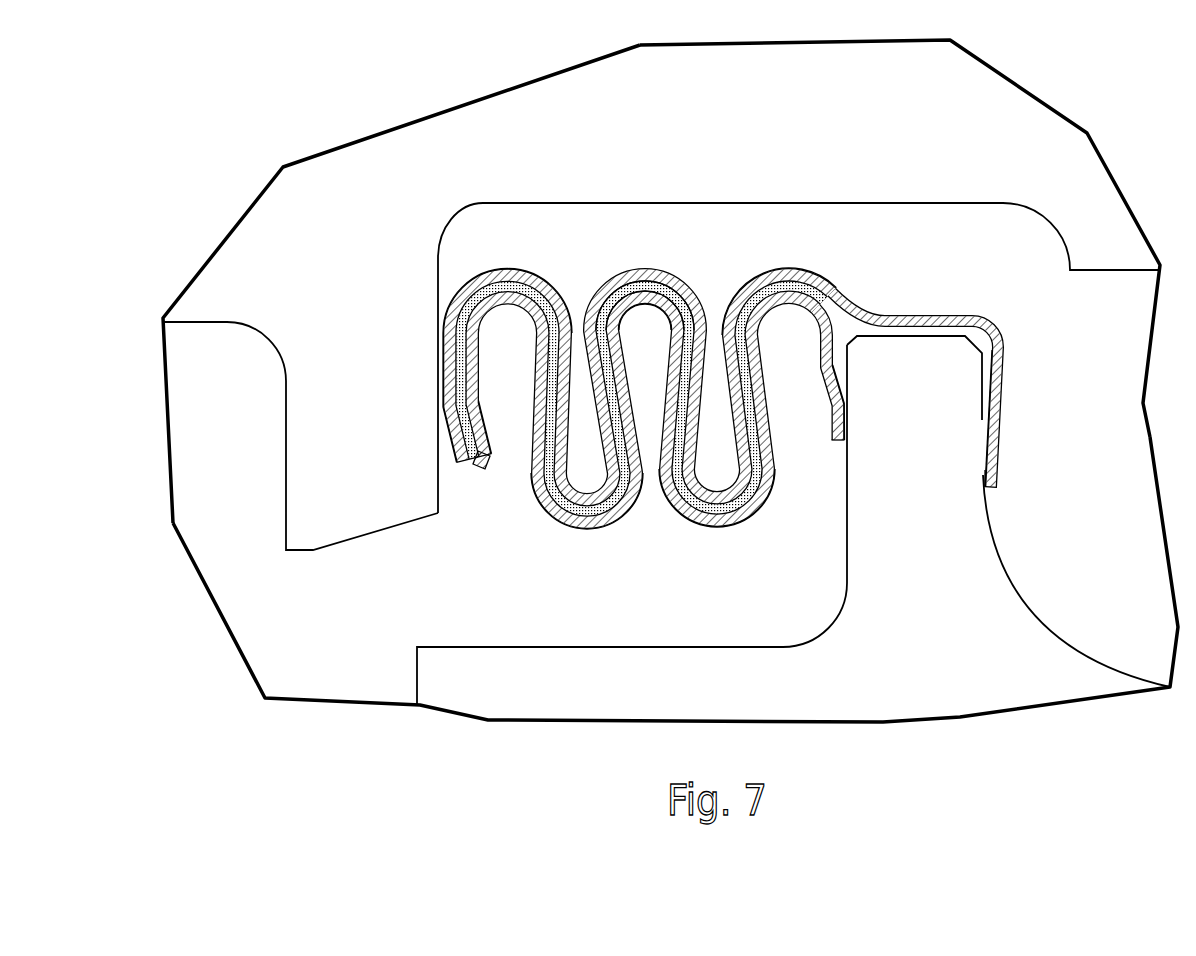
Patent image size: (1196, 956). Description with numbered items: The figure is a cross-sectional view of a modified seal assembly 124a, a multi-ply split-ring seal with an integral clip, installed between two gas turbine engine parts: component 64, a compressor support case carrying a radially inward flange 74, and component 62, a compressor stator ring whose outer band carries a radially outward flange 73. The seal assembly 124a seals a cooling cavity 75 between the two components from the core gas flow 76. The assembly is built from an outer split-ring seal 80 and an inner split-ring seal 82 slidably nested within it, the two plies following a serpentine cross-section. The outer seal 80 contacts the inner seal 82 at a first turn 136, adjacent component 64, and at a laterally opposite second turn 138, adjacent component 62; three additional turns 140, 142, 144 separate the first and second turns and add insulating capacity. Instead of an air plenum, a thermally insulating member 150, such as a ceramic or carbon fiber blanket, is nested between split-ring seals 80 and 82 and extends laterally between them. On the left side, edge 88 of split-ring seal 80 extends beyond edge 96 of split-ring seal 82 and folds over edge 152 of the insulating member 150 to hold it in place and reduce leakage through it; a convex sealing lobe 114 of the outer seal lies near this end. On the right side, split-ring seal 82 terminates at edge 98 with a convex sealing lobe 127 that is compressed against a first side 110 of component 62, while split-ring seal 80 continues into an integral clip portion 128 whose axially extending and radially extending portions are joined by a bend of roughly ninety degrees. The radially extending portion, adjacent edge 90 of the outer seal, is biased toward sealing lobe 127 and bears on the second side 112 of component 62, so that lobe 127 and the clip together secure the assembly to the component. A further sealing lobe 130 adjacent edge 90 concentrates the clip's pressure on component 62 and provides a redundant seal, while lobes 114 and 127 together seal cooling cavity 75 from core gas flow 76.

The modified seal assembly 124a is at (882, 152).
The component 64 is at (301, 240).
The component 62 is at (907, 639).
The flange 74 is at (315, 387).
The cooling cavity 75 is at (666, 249).
The core gas flow 76 is at (434, 590).
The first side 110 is at (843, 508).
The flange 73 is at (947, 372).
The split-ring seal 80 is at (690, 282).
The split-ring seal 82 is at (652, 318).
The edge 88 is at (468, 483).
The edge 90 is at (997, 484).
The edge 96 is at (476, 452).
The edge 98 is at (833, 443).
The second side 112 is at (983, 420).
The sealing lobe 114 is at (433, 423).
The sealing lobe 127 is at (852, 411).
The integral clip portion 128 is at (908, 304).
The sealing lobe 130 is at (975, 479).
The first turn 136 is at (512, 270).
The second turn 138 is at (797, 272).
The additional turn 140 is at (578, 527).
The additional turn 142 is at (645, 275).
The additional turn 144 is at (715, 527).
The insulating member 150 is at (627, 293).
The edge 152 is at (477, 466).